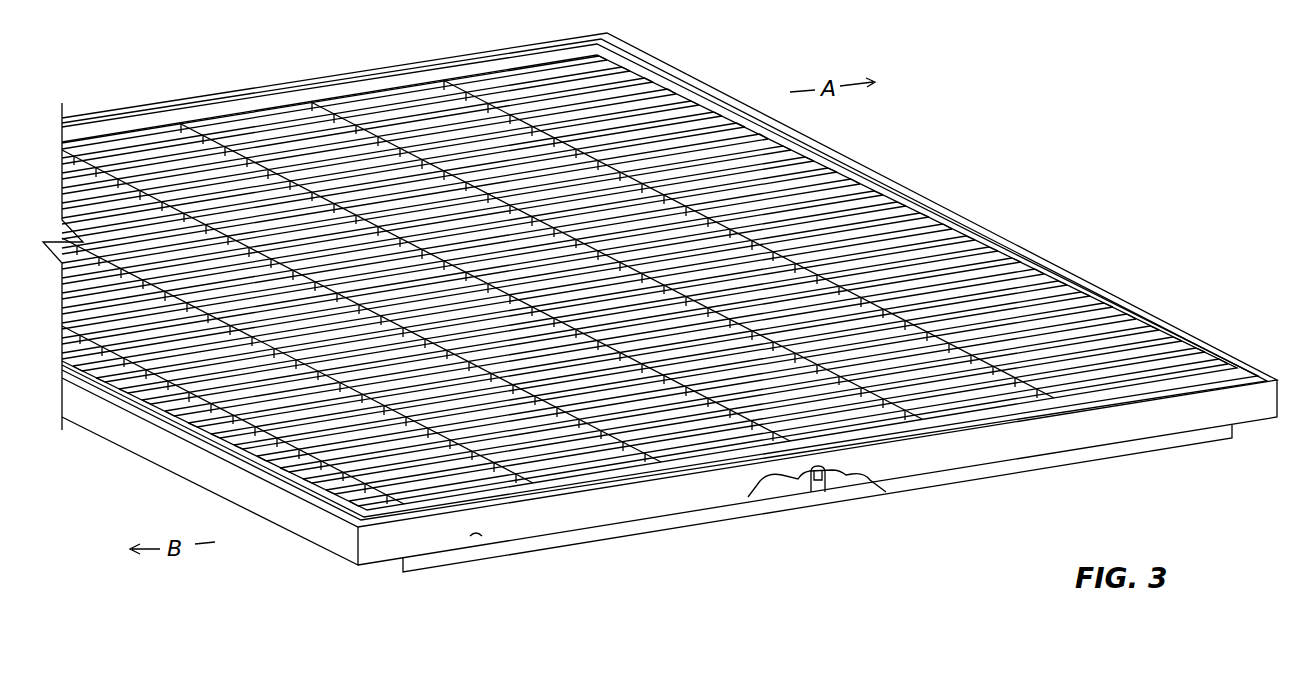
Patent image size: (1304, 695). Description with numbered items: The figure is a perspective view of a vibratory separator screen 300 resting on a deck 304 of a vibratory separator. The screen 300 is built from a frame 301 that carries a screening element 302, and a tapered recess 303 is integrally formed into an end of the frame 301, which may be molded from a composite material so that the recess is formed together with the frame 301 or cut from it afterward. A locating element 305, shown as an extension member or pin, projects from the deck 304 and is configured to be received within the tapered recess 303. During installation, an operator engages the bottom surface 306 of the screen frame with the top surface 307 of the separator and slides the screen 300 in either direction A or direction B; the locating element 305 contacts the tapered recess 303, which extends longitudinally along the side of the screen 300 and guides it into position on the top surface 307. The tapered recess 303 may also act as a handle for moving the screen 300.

The screen 300 is at (307, 47).
The frame 301 is at (205, 473).
The screening element 302 is at (908, 242).
The tapered recess 303 is at (856, 482).
The deck 304 is at (595, 536).
The locating element 305 is at (815, 494).
The bottom surface 306 is at (325, 556).
The top surface 307 is at (480, 545).